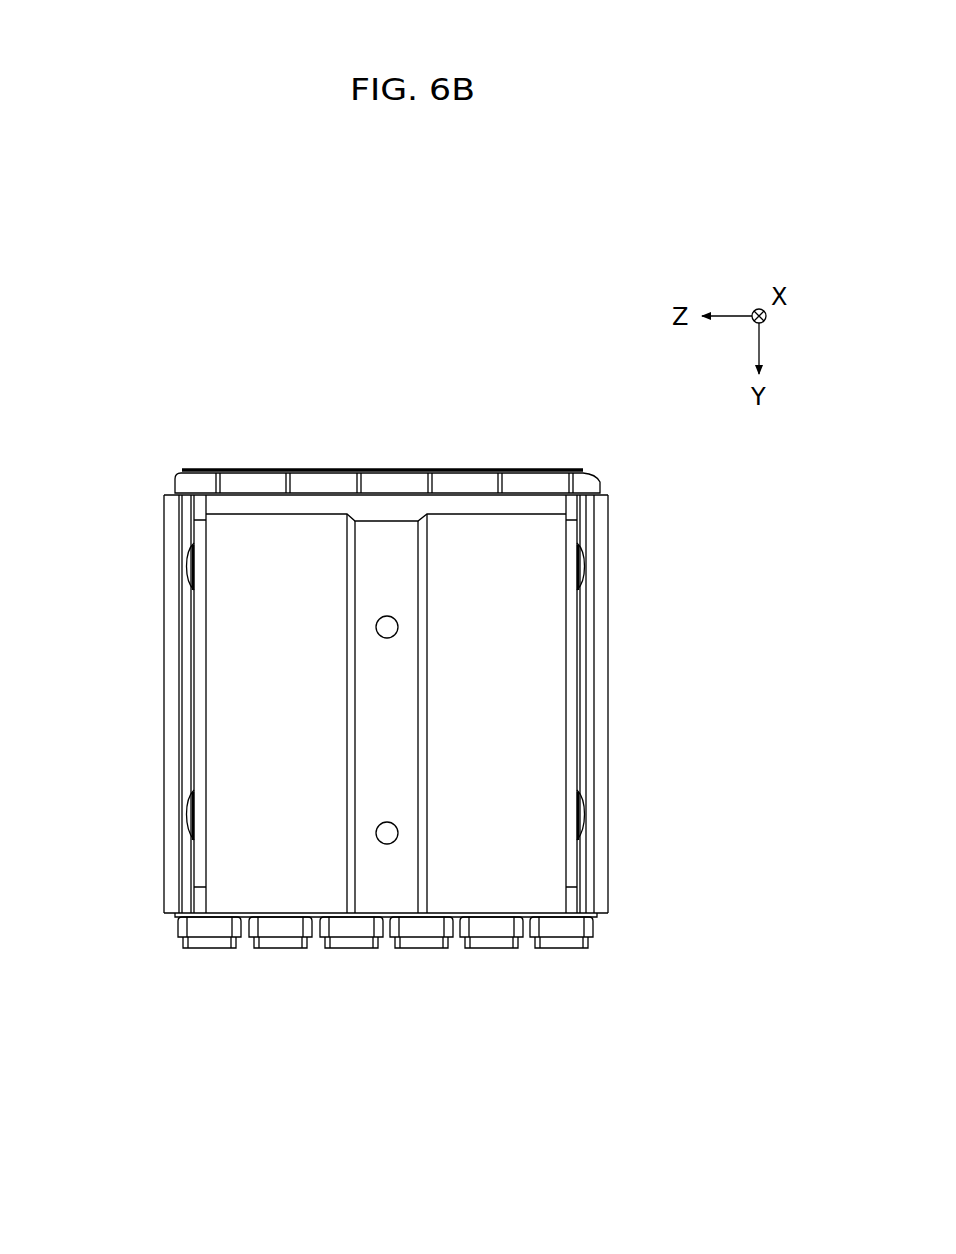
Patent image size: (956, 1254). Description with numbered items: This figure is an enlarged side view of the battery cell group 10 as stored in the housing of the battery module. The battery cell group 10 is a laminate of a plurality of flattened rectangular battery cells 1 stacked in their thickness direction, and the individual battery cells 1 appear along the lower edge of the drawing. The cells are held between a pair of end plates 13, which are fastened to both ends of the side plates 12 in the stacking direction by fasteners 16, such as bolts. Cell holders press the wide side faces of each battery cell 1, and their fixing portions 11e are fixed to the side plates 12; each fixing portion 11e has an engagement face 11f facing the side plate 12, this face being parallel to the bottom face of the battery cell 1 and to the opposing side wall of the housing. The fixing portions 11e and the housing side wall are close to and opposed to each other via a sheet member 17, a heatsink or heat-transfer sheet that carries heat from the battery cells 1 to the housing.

The battery cell group 10 is at (198, 373).
The battery cell 1 is at (279, 952).
The fixing portion 11e is at (316, 487).
The engagement face 11f is at (540, 495).
The side plate 12 is at (400, 488).
The end plate 13 is at (172, 698).
The fastener 16 is at (183, 572).
The sheet member 17 is at (504, 470).